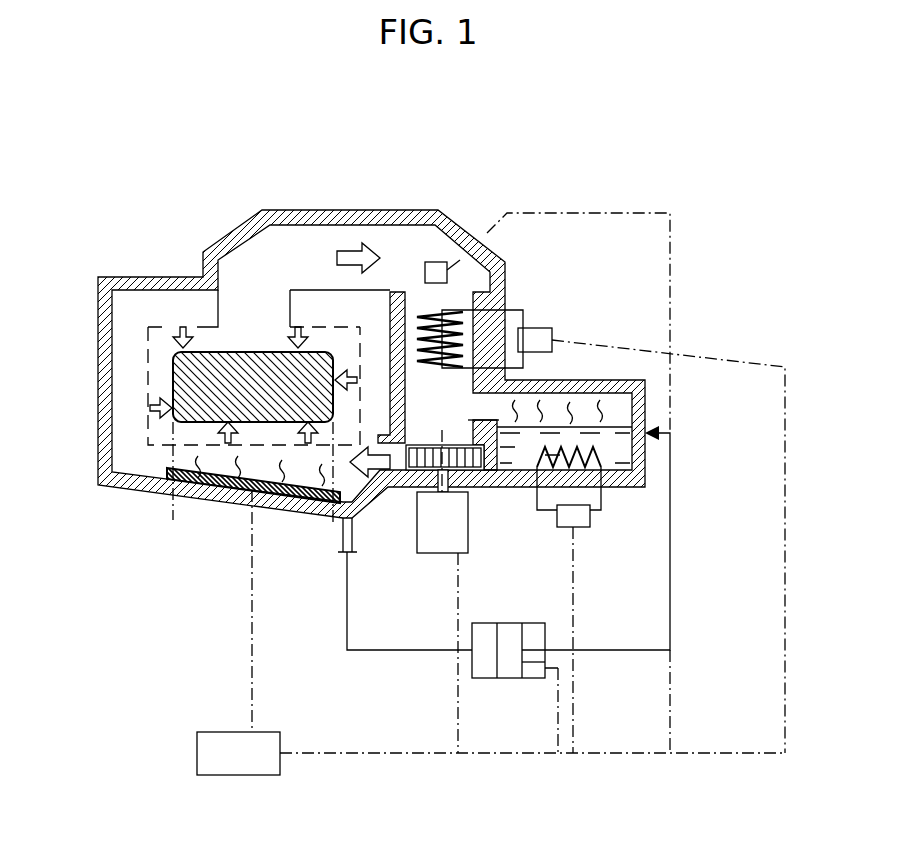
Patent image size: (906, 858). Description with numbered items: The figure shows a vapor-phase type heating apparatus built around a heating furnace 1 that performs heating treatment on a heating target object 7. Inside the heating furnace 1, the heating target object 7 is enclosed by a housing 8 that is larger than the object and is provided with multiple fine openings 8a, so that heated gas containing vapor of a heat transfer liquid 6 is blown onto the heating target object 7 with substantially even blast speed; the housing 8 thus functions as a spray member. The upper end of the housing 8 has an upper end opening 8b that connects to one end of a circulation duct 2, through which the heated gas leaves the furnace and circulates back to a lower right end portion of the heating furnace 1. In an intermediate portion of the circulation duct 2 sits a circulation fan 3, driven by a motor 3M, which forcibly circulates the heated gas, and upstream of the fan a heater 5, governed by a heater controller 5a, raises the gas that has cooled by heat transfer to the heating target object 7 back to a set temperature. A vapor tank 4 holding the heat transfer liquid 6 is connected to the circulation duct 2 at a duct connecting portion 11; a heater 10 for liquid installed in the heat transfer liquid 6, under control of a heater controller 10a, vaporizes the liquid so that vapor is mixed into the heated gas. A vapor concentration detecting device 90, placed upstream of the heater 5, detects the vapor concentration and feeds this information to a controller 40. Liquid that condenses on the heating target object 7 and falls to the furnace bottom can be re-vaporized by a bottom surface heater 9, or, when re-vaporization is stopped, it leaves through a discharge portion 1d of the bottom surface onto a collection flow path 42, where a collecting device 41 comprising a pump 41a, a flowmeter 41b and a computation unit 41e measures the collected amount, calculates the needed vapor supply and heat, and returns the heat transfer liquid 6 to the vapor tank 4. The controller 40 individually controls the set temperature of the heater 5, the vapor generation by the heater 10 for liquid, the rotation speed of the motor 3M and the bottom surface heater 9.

The heating furnace 1 is at (172, 320).
The discharge portion 1d is at (343, 536).
The circulation duct 2 is at (313, 260).
The circulation fan 3 is at (463, 460).
The motor 3M is at (417, 525).
The vapor tank 4 is at (578, 411).
The heater 5 is at (521, 309).
The heater controller 5a is at (540, 327).
The heat transfer liquid 6 is at (612, 452).
The heating target object 7 is at (200, 367).
The housing 8 is at (148, 434).
The openings 8a is at (145, 408).
The upper end opening 8b is at (252, 303).
The bottom surface heater 9 is at (245, 488).
The heater for liquid 10 is at (598, 510).
The heater controller 10a is at (565, 528).
The duct connecting portion 11 is at (489, 421).
The controller 40 is at (238, 776).
The collecting device 41 is at (498, 683).
The pump 41a is at (510, 632).
The flowmeter 41b is at (480, 632).
The computation unit 41e is at (533, 677).
The collection flow path 42 is at (390, 652).
The vapor concentration detecting device 90 is at (445, 262).